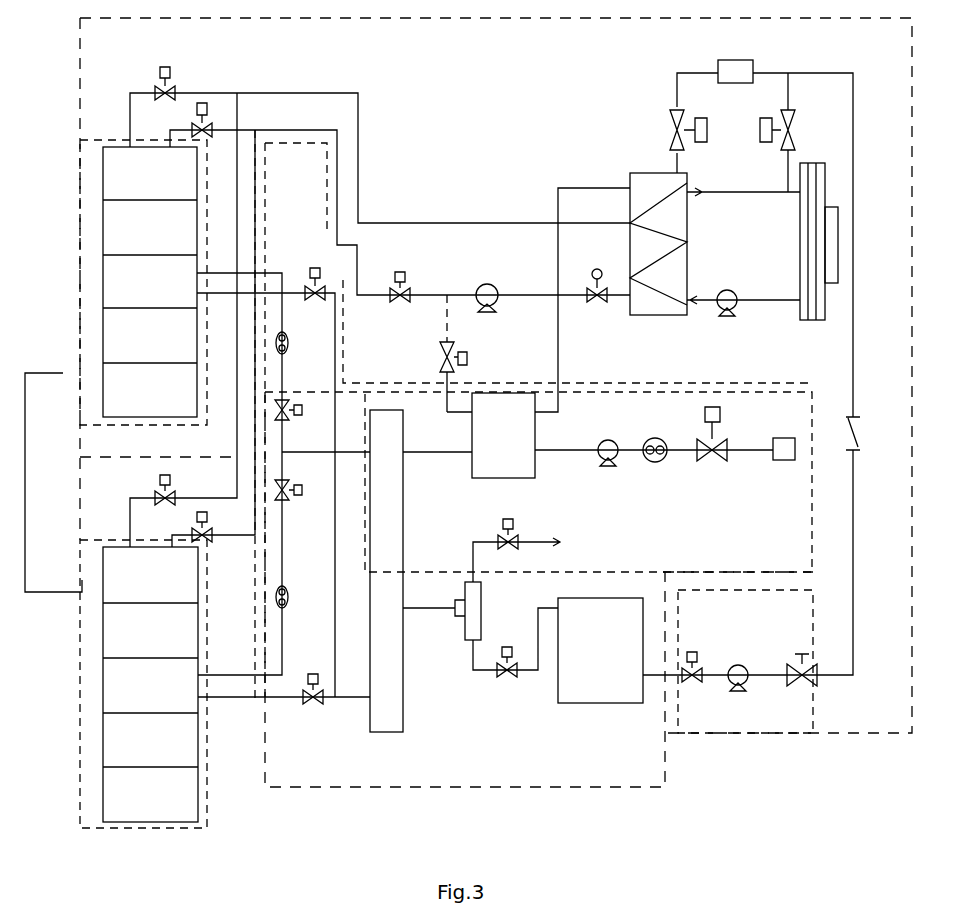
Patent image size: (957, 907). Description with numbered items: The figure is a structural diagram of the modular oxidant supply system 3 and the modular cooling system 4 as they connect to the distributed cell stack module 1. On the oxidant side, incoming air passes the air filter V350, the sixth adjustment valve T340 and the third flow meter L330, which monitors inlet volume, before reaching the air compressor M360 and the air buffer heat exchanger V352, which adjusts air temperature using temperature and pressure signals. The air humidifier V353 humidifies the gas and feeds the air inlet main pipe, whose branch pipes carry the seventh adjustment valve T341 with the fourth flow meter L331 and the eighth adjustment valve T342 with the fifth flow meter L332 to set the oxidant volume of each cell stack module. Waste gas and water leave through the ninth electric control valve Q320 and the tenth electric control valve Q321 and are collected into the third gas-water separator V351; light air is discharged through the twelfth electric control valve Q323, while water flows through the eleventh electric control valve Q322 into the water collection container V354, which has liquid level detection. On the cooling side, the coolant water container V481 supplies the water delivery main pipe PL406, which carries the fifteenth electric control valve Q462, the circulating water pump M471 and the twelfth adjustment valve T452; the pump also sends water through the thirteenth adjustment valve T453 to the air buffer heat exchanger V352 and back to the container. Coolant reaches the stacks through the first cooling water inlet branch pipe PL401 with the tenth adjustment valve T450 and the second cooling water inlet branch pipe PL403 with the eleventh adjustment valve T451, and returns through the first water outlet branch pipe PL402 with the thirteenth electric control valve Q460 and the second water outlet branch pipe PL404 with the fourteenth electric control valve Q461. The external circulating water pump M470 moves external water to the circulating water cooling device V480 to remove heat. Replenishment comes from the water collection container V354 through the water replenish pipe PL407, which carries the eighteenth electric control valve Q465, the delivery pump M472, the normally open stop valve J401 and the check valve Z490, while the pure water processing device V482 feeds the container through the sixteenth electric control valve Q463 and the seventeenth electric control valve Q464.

The distributed cell stack module 1 is at (63, 373).
The modular oxidant supply system 3 is at (440, 790).
The modular cooling system 4 is at (708, 735).
The thirteenth electric control valve Q460 is at (160, 67).
The tenth adjustment valve T450 is at (207, 103).
The first cooling water inlet branch pipe PL401 is at (380, 158).
The first water outlet branch pipe PL402 is at (130, 113).
The second cooling water inlet branch pipe PL403 is at (173, 540).
The second water outlet branch pipe PL404 is at (130, 540).
The water delivery main pipe PL406 is at (562, 362).
The water replenish pipe PL407 is at (650, 677).
The fourteenth electric control valve Q461 is at (160, 493).
The eleventh adjustment valve T451 is at (208, 546).
The ninth electric control valve Q320 is at (308, 285).
The tenth electric control valve Q321 is at (328, 710).
The eleventh electric control valve Q322 is at (517, 687).
The twelfth electric control valve Q323 is at (505, 536).
The fourth flow meter L331 is at (330, 344).
The fifth flow meter L332 is at (283, 613).
The seventh adjustment valve T341 is at (282, 395).
The eighth adjustment valve T342 is at (283, 507).
The twelfth adjustment valve T452 is at (403, 272).
The thirteenth adjustment valve T453 is at (462, 366).
The circulating water pump M471 is at (488, 283).
The external circulating water pump M470 is at (726, 318).
The delivery pump M472 is at (731, 688).
The air compressor M360 is at (608, 437).
The fifteenth electric control valve Q462 is at (597, 268).
The sixteenth electric control valve Q463 is at (675, 109).
The seventeenth electric control valve Q464 is at (760, 132).
The eighteenth electric control valve Q465 is at (690, 645).
The coolant water container V481 is at (737, 259).
The circulating water cooling device V480 is at (802, 163).
The pure water processing device V482 is at (752, 58).
The air buffer heat exchanger V352 is at (513, 478).
The third gas-water separator V351 is at (465, 597).
The air humidifier V353 is at (440, 757).
The water collection container V354 is at (613, 598).
The air filter V350 is at (780, 459).
The third flow meter L330 is at (648, 461).
The sixth adjustment valve T340 is at (715, 443).
The check valve Z490 is at (908, 402).
The stop valve J401 is at (803, 648).